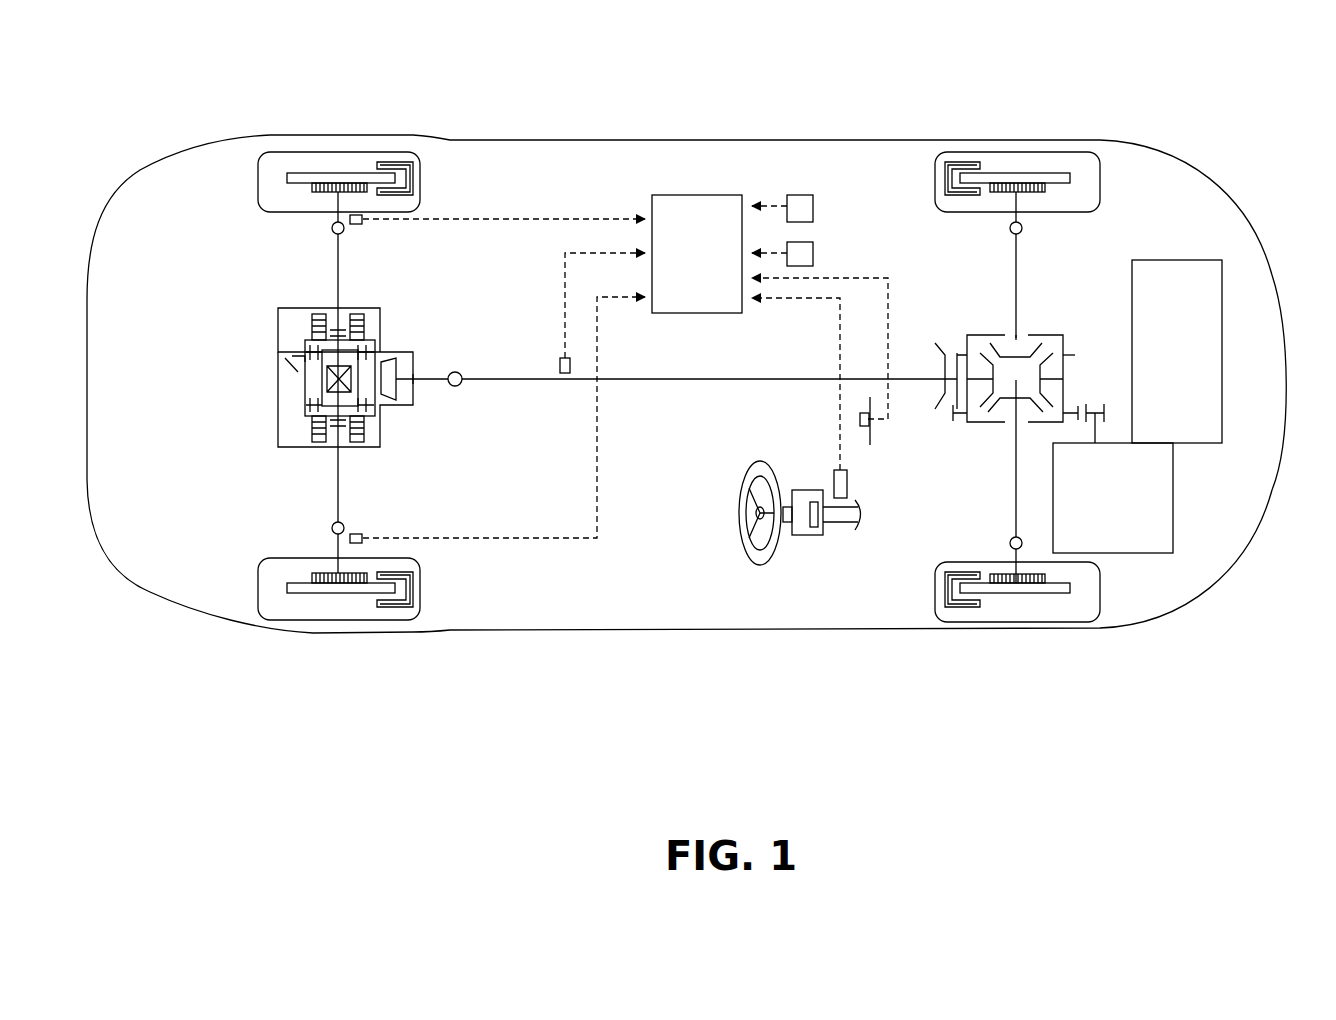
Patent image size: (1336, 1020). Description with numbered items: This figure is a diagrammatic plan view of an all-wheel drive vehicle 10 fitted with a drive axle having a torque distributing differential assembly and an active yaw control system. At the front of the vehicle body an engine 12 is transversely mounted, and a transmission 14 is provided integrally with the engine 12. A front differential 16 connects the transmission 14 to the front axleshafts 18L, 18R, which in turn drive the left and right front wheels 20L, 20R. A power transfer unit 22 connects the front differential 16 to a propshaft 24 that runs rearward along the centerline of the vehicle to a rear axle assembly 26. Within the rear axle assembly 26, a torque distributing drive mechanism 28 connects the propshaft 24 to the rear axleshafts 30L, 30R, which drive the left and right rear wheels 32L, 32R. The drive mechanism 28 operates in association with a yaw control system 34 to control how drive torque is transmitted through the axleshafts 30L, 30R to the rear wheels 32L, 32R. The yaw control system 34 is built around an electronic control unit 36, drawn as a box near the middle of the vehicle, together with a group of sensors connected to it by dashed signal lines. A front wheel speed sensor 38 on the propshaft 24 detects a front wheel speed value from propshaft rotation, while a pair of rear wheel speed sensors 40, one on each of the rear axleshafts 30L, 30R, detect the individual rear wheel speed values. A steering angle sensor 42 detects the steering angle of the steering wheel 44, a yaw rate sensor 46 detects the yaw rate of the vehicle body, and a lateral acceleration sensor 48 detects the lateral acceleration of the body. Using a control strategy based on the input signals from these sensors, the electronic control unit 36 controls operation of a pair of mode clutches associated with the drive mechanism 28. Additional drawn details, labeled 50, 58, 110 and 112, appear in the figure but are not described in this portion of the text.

The all-wheel drive vehicle 10 is at (872, 645).
The engine 12 is at (1210, 338).
The transmission 14 is at (1162, 498).
The front differential 16 is at (982, 448).
The front axleshaft 18L is at (1016, 254).
The front axleshaft 18R is at (1016, 496).
The front wheel 20L is at (1097, 152).
The front wheel 20R is at (1100, 622).
The power transfer unit 22 is at (932, 298).
The propshaft 24 is at (697, 381).
The rear axle assembly 26 is at (416, 497).
The torque distributing drive mechanism 28 is at (266, 388).
The axleshaft 30L is at (338, 248).
The axleshaft 30R is at (338, 490).
The rear wheel 32L is at (418, 152).
The rear wheel 32R is at (420, 620).
The yaw control system 34 is at (722, 178).
The electronic control unit 36 is at (693, 208).
The front wheel speed sensor 38 is at (560, 365).
The rear wheel speed sensor 40 is at (360, 224).
The steering angle sensor 42 is at (846, 482).
The steering wheel 44 is at (745, 543).
The yaw rate sensor 46 is at (805, 255).
The lateral acceleration sensor 48 is at (805, 210).
The throttle pedal sensor 50 is at (858, 419).
The coupling 58 is at (425, 380).
The transfer case housing 110 is at (1075, 355).
The transfer case output 112 is at (1052, 336).